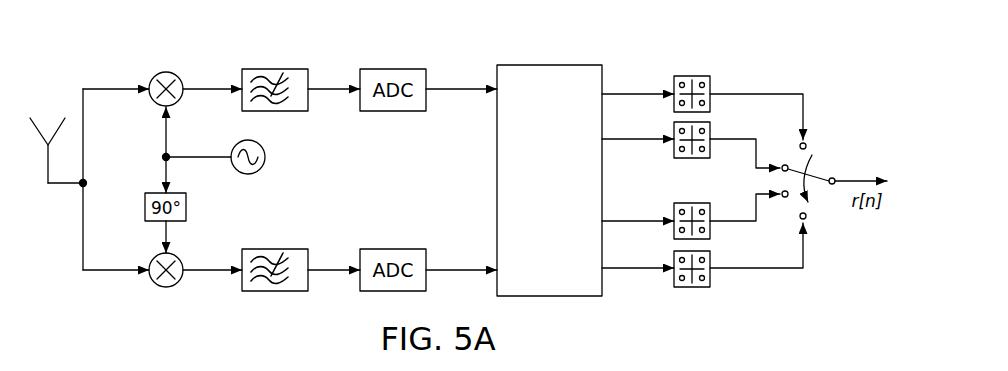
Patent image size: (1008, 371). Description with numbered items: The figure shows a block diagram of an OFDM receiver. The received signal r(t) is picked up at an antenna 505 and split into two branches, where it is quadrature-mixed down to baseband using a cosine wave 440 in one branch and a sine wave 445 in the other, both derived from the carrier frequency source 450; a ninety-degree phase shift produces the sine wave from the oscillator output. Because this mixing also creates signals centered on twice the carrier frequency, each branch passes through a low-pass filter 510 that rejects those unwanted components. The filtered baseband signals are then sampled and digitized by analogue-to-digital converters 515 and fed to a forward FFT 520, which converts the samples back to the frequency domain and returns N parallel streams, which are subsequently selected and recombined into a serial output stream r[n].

The antenna 505 is at (47, 130).
The cosine wave mixer 440 is at (169, 70).
The sine wave mixer 445 is at (181, 257).
The carrier frequency oscillator 450 is at (267, 155).
The low-pass filter 510 is at (277, 69).
The analogue-to-digital converter 515 is at (394, 69).
The forward FFT 520 is at (563, 287).